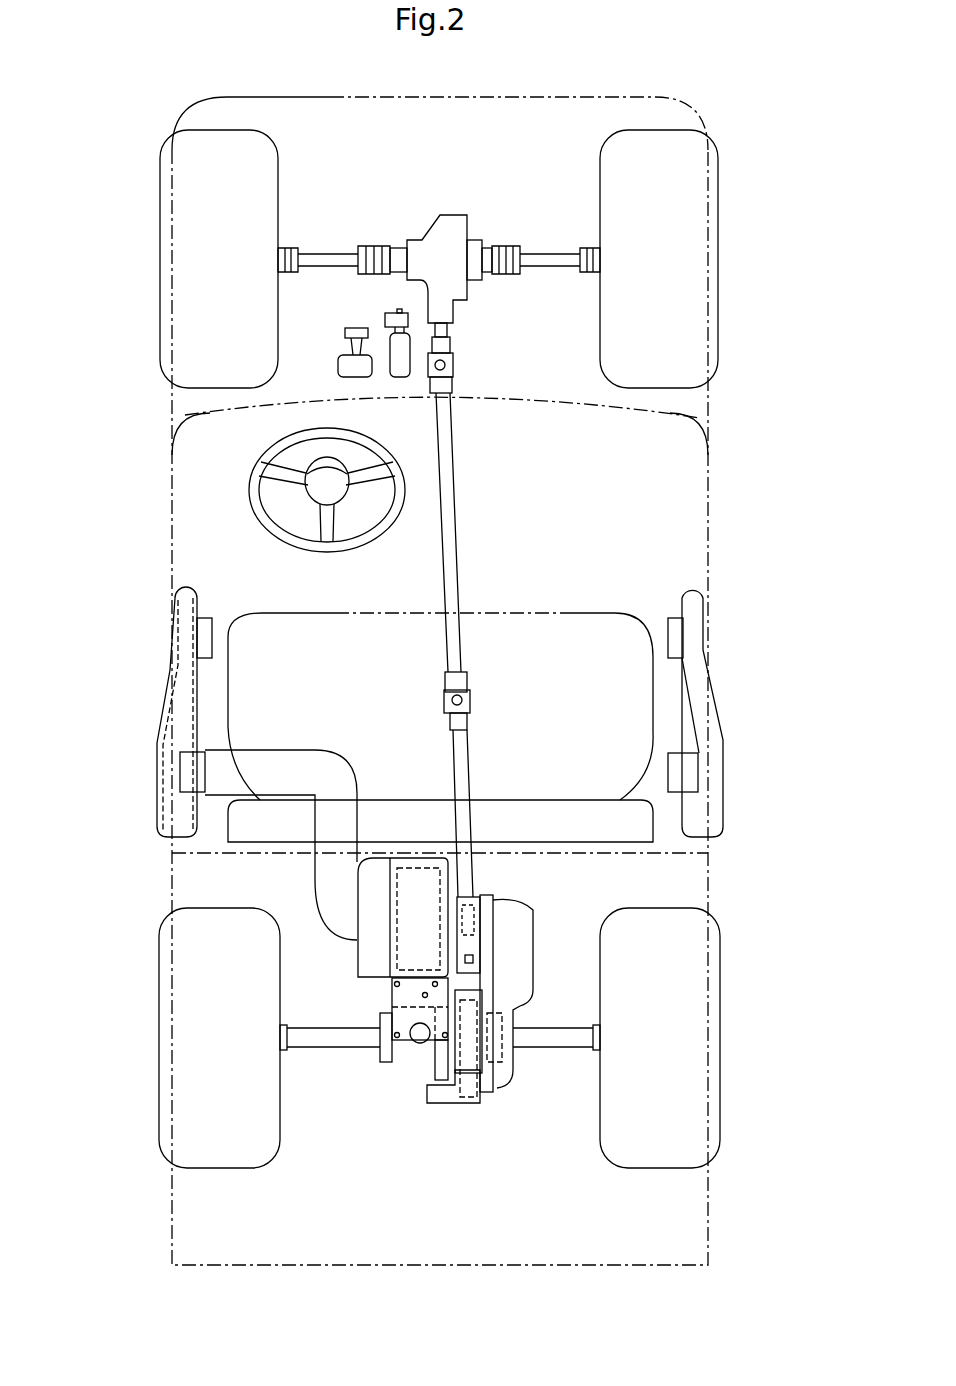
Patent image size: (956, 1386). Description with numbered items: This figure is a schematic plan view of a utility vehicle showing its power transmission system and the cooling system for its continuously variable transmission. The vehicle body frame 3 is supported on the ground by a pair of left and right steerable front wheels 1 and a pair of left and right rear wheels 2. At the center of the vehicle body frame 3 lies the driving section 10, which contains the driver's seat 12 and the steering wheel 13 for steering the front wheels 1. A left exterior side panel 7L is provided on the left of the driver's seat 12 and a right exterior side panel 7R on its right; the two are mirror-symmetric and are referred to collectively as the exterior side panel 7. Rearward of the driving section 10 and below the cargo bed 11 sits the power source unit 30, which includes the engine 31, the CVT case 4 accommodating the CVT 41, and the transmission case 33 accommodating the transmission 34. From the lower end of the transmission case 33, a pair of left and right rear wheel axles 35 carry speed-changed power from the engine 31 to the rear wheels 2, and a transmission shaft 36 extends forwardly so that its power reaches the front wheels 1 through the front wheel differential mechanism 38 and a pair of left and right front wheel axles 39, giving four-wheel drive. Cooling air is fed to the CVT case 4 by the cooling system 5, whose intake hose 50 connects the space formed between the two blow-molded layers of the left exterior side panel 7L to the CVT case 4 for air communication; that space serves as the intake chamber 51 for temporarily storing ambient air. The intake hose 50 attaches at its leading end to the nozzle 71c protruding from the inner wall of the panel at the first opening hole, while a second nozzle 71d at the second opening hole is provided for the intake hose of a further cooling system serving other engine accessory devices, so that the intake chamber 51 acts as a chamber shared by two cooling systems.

The front wheels 1 is at (160, 185).
The rear wheels 2 is at (165, 1048).
The vehicle body frame 3 is at (436, 683).
The CVT case 4 is at (396, 925).
The cooling system 5 is at (320, 793).
The exterior side panel 7 is at (443, 677).
The left exterior side panel 7L is at (138, 677).
The right exterior side panel 7R is at (742, 722).
The driving section 10 is at (417, 681).
The cargo bed 11 is at (172, 1200).
The driver's seat 12 is at (562, 612).
The steering wheel 13 is at (253, 490).
The power source unit 30 is at (442, 1025).
The engine 31 is at (528, 933).
The transmission case 33 is at (470, 1105).
The transmission 34 is at (445, 1095).
The rear wheel axles 35 is at (320, 1045).
The transmission shaft 36 is at (457, 455).
The front wheel differential mechanism 38 is at (450, 218).
The front wheel axles 39 is at (330, 258).
The CVT 41 is at (400, 953).
The intake hose 50 is at (345, 775).
The intake chamber 51 is at (140, 727).
The nozzle 71c is at (185, 773).
The nozzle 71d is at (205, 620).